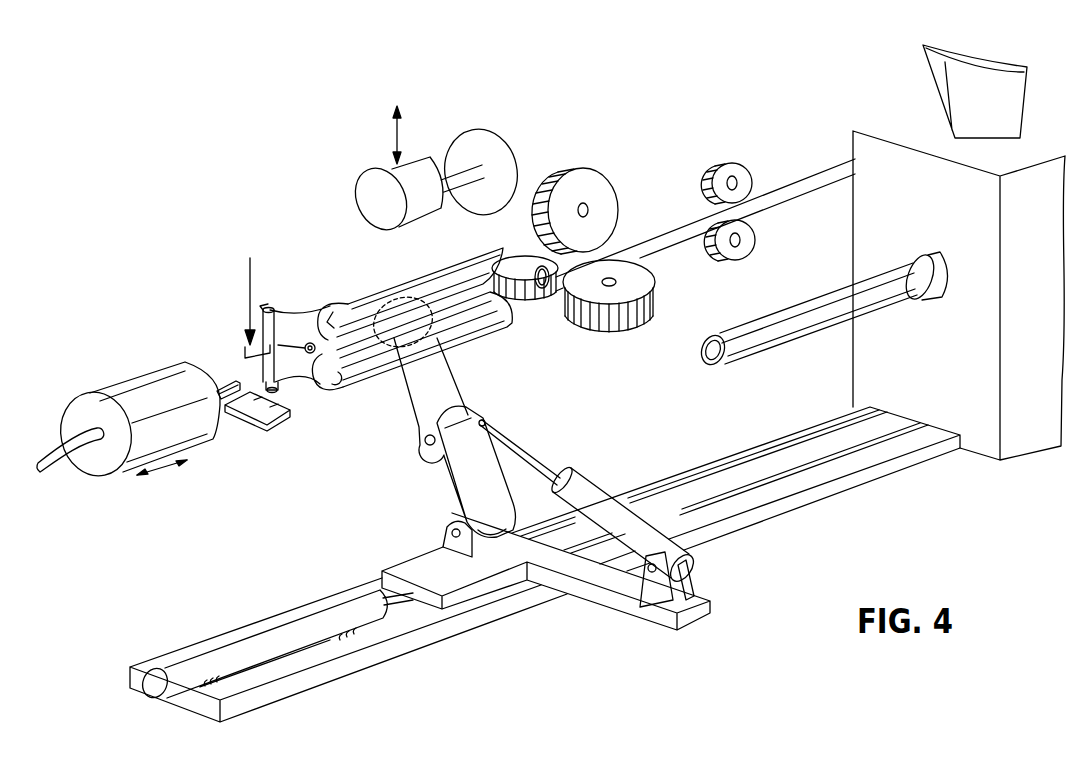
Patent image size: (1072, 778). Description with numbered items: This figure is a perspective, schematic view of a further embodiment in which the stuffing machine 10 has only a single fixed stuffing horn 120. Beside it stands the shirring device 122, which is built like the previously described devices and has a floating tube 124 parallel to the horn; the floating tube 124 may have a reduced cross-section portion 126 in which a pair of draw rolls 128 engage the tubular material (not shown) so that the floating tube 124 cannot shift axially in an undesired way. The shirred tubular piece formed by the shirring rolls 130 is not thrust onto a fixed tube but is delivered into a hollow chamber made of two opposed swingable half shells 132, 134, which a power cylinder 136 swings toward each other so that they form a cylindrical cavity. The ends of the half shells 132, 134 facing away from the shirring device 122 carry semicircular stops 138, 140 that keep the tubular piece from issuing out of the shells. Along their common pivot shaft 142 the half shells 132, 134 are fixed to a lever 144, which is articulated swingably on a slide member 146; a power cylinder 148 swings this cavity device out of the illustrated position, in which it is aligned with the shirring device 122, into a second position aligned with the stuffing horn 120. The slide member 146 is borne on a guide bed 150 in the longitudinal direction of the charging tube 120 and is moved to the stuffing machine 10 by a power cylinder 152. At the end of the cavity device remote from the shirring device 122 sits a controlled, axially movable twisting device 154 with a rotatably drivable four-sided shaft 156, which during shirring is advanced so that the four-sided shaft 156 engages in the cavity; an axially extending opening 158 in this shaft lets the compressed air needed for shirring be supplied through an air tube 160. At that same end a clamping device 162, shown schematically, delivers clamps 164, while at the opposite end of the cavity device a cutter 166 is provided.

The stuffing machine 10 is at (867, 360).
The stuffing horn 120 is at (750, 345).
The shirring device 122 is at (673, 218).
The floating tube 124 is at (677, 223).
The reduced cross-section portion 126 is at (750, 212).
The draw rolls 128 is at (732, 168).
The shirring rolls 130 is at (597, 187).
The half shell 132 is at (432, 280).
The half shell 134 is at (473, 328).
The power cylinder 136 is at (273, 340).
The semicircular stop 138 is at (330, 312).
The semicircular stop 140 is at (333, 387).
The pivot shaft 142 is at (310, 353).
The lever 144 is at (450, 455).
The slide member 146 is at (412, 567).
The power cylinder 148 is at (585, 490).
The guide bed 150 is at (425, 615).
The power cylinder 152 is at (257, 640).
The twisting device 154 is at (133, 378).
The four-sided shaft 156 is at (220, 417).
The axially extending opening 158 is at (217, 377).
The air tube 160 is at (62, 458).
The clamping device 162 is at (248, 320).
The clamps 164 is at (243, 357).
The cutter 166 is at (498, 152).